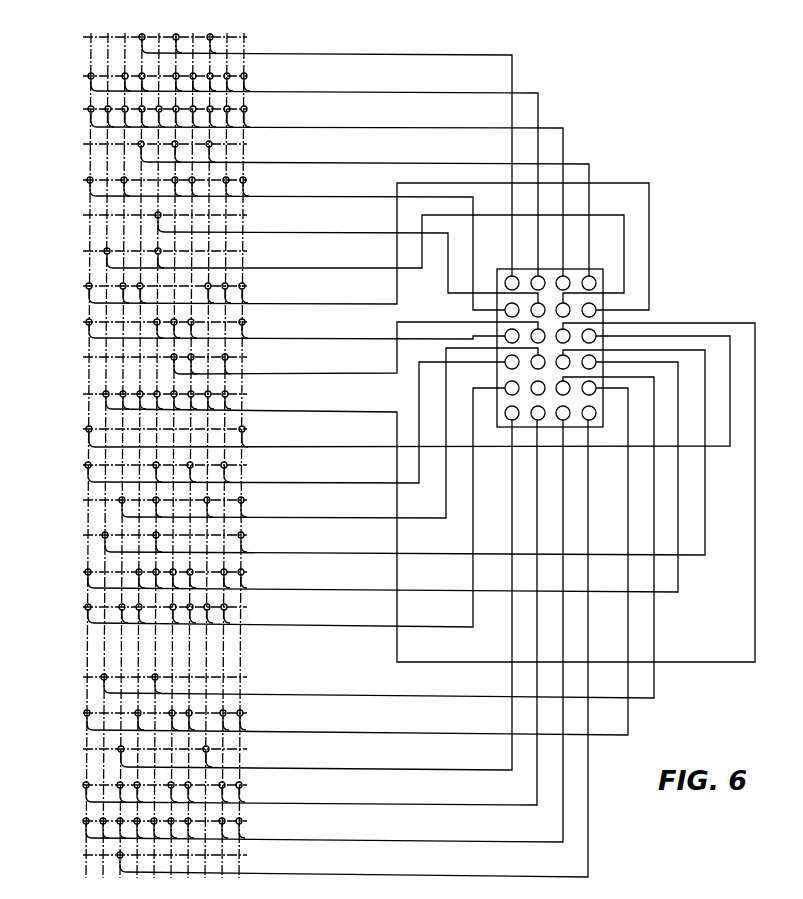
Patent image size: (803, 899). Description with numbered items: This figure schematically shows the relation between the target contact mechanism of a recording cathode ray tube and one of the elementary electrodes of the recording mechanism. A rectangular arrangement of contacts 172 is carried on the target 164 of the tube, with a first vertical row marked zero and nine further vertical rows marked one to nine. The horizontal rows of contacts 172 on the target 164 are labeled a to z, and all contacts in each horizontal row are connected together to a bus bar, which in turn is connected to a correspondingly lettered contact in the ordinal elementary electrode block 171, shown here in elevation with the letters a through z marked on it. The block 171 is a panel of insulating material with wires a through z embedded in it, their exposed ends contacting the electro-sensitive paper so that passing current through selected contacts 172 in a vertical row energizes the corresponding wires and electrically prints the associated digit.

The target 164 is at (265, 42).
The ordinal elementary electrode block 171 is at (603, 317).
The contacts 172 is at (259, 821).